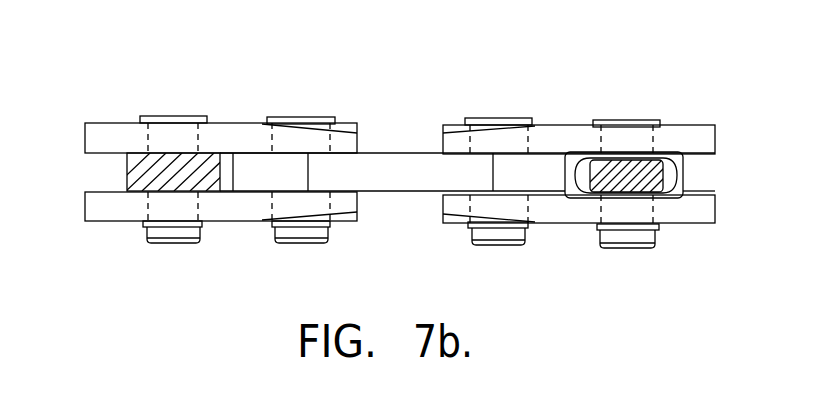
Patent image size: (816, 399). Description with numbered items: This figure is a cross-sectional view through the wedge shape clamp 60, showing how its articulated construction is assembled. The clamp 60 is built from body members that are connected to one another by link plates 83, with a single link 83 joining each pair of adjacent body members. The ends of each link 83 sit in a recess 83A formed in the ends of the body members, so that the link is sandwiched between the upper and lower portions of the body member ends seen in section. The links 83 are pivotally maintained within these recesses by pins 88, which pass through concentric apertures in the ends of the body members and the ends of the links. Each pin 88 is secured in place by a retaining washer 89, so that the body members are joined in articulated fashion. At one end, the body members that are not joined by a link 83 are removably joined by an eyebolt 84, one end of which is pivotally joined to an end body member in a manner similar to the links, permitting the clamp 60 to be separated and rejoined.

The wedge shape clamp 60 is at (197, 64).
The link plate 83 is at (140, 160).
The recess 83A is at (103, 170).
The eyebolt 84 is at (672, 170).
The pin 88 is at (166, 116).
The retaining washer 89 is at (145, 228).